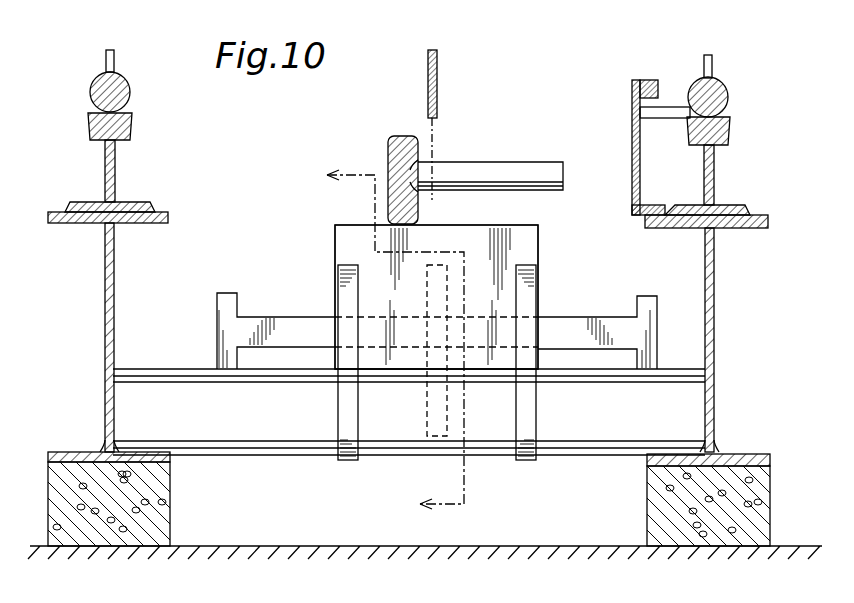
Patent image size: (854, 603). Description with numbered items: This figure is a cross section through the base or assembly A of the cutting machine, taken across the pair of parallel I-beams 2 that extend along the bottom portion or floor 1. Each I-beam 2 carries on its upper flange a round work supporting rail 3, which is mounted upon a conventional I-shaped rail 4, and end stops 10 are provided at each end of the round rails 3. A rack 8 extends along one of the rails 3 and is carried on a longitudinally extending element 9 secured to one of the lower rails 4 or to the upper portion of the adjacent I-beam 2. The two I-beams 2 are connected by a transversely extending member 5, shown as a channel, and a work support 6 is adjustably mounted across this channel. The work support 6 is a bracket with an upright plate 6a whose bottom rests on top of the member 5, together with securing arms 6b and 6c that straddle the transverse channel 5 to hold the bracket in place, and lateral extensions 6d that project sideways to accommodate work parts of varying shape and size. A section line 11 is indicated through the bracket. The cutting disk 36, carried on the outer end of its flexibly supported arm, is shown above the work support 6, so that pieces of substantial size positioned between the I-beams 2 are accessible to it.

The bottom portion 1 is at (155, 508).
The I-beam 2 is at (105, 285).
The work supporting rail 3 is at (120, 92).
The conventional rail 4 is at (115, 170).
The transversely extending member 5 is at (152, 394).
The work support 6 is at (545, 271).
The upright plate 6a is at (523, 246).
The securing arm 6b is at (350, 440).
The securing arm 6c is at (436, 436).
The lateral extension 6d is at (250, 327).
The rack 8 is at (648, 80).
The longitudinally extending element 9 is at (632, 132).
The end stop 10 is at (106, 62).
The section line 11 is at (395, 341).
The cutting disk 36 is at (437, 68).
The base or assembly A is at (726, 354).